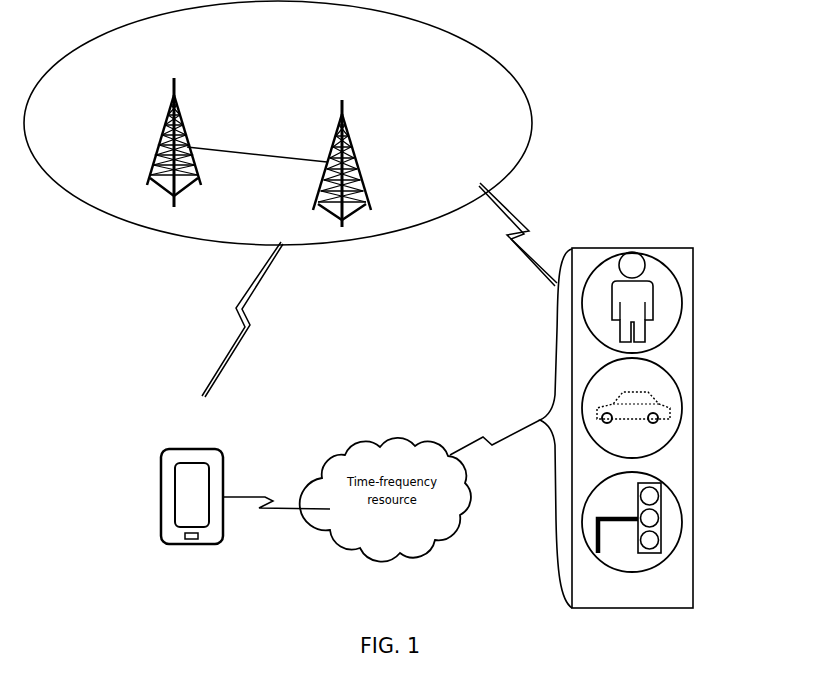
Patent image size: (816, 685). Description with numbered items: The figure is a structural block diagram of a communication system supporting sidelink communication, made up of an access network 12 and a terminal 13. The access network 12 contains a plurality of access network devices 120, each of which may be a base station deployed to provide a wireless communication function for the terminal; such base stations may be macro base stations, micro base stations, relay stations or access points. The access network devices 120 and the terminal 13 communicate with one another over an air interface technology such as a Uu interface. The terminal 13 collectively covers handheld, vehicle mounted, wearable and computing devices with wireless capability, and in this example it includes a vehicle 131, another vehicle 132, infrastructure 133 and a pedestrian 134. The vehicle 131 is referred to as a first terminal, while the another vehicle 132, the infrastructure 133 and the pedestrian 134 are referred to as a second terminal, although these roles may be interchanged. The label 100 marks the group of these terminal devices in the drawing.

The access network 12 is at (413, 43).
The access network device 120 is at (183, 123).
The terminal 13 is at (518, 345).
The vehicle 131 is at (190, 452).
The another vehicle 132 is at (682, 408).
The infrastructure 133 is at (682, 522).
The pedestrian 134 is at (682, 300).
The terminal device group 100 is at (645, 600).